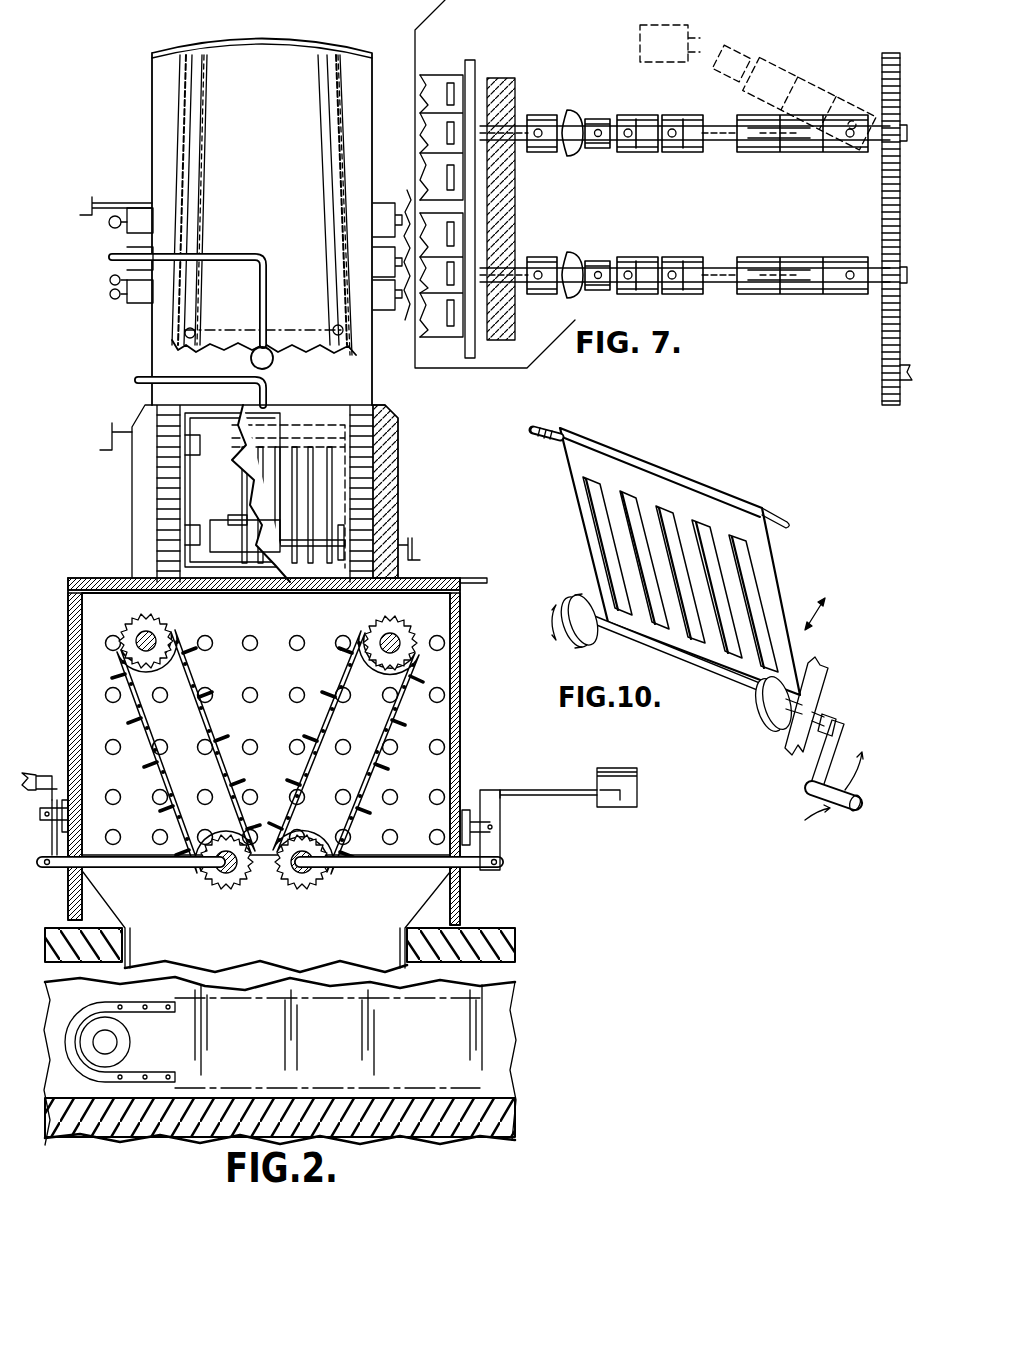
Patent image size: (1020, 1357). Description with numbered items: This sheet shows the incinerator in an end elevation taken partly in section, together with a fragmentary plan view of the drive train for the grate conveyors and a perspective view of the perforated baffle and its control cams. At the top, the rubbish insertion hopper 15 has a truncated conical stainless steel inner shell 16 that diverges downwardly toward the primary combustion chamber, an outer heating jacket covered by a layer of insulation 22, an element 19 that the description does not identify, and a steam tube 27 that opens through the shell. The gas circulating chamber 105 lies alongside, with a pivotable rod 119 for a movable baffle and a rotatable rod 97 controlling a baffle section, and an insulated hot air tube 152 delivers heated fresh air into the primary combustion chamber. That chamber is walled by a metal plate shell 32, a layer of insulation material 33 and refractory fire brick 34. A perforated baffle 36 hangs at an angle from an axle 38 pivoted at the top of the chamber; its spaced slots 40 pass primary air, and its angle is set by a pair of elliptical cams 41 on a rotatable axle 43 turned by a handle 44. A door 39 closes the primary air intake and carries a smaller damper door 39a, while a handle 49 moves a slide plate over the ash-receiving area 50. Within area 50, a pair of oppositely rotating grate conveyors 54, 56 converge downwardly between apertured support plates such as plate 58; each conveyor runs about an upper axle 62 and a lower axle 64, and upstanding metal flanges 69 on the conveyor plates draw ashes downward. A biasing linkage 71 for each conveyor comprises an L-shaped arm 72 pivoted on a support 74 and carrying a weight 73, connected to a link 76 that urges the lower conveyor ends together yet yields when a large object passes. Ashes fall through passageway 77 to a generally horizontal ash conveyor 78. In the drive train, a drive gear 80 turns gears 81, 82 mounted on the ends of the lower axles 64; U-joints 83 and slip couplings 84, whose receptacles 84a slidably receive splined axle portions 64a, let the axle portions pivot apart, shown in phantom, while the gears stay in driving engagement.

In FIG. 2, the rubbish insertion hopper 15 is at (350, 58).
In FIG. 2, the gas circulating chamber 105 is at (232, 30).
In FIG. 2, the inner shell 16 is at (196, 146).
In FIG. 2, the tube lining 19 is at (198, 195).
In FIG. 2, the layer of insulation 22 is at (178, 136).
In FIG. 2, the steam tube 27 is at (302, 320).
In FIG. 2, the pivotable rod 119 is at (104, 198).
In FIG. 2, the insulated hot air tube 152 is at (138, 378).
In FIG. 2, the rotatable rod 97 is at (120, 430).
In FIG. 2, the refractory material 34 is at (360, 412).
In FIG. 2, the layer of insulation material 33 is at (385, 442).
In FIG. 2, the metal plate shell 32 is at (392, 408).
In FIG. 2, the perforated baffle 36 is at (340, 480).
In FIG. 10, the perforated baffle 36 is at (640, 470).
In FIG. 2, the elliptical cams 41 is at (345, 530).
In FIG. 10, the elliptical cams 41 is at (590, 640).
In FIG. 2, the door 39 is at (228, 488).
In FIG. 2, the damper door 39a is at (248, 546).
In FIG. 2, the handle 44 is at (416, 548).
In FIG. 10, the handle 44 is at (815, 758).
In FIG. 2, the handle 49 is at (470, 578).
In FIG. 2, the ash-receiving area 50 is at (108, 610).
In FIG. 2, the support plate 58 is at (270, 607).
In FIG. 2, the grate conveyor 54 is at (114, 663).
In FIG. 2, the grate conveyor 56 is at (422, 675).
In FIG. 2, the metal flanges 69 is at (210, 690).
In FIG. 2, the upper axle 62 is at (158, 638).
In FIG. 2, the lower axle 64 is at (208, 890).
In FIG. 7, the lower axle 64 is at (515, 122).
In FIG. 7, the axle portion 64a is at (720, 136).
In FIG. 2, the link 76 is at (148, 872).
In FIG. 2, the support 74 is at (55, 800).
In FIG. 2, the L-shaped arm 72 is at (30, 775).
In FIG. 2, the weight 73 is at (614, 812).
In FIG. 2, the biasing linkage 71 is at (48, 878).
In FIG. 2, the passageway 77 is at (405, 946).
In FIG. 2, the ash conveyor 78 is at (170, 1005).
In FIG. 7, the U-joints 83 is at (638, 118).
In FIG. 7, the slip couplings 84 is at (742, 116).
In FIG. 7, the receptacles 84a is at (785, 145).
In FIG. 7, the drive gear 80 is at (882, 378).
In FIG. 7, the gear 81 is at (882, 300).
In FIG. 7, the gear 82 is at (882, 78).
In FIG. 10, the axle 38 is at (790, 516).
In FIG. 10, the slots 40 is at (685, 600).
In FIG. 10, the rotatable axle 43 is at (676, 658).